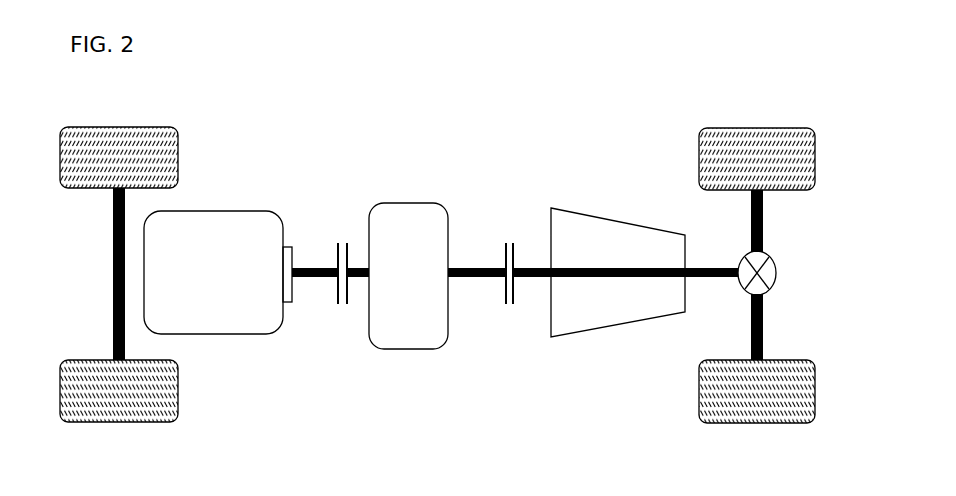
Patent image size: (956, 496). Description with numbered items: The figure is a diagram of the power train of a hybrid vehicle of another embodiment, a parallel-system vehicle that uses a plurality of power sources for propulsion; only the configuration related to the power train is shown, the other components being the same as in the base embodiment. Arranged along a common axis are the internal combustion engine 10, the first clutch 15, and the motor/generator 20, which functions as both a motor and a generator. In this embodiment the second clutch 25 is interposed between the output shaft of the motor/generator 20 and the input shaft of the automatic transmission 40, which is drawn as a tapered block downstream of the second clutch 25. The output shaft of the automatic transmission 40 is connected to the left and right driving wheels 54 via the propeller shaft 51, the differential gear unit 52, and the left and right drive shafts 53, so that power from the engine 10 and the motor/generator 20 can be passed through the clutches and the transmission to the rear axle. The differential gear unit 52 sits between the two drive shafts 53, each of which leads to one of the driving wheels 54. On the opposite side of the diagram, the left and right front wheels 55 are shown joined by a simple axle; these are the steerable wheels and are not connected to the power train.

The internal combustion engine 10 is at (224, 210).
The first clutch 15 is at (337, 250).
The motor/generator 20 is at (383, 203).
The second clutch 25 is at (505, 250).
The automatic transmission 40 is at (623, 222).
The propeller shaft 51 is at (726, 268).
The differential gear unit 52 is at (778, 272).
The drive shaft 53 is at (764, 222).
The driving wheels 54 is at (790, 127).
The front wheels 55 is at (82, 126).